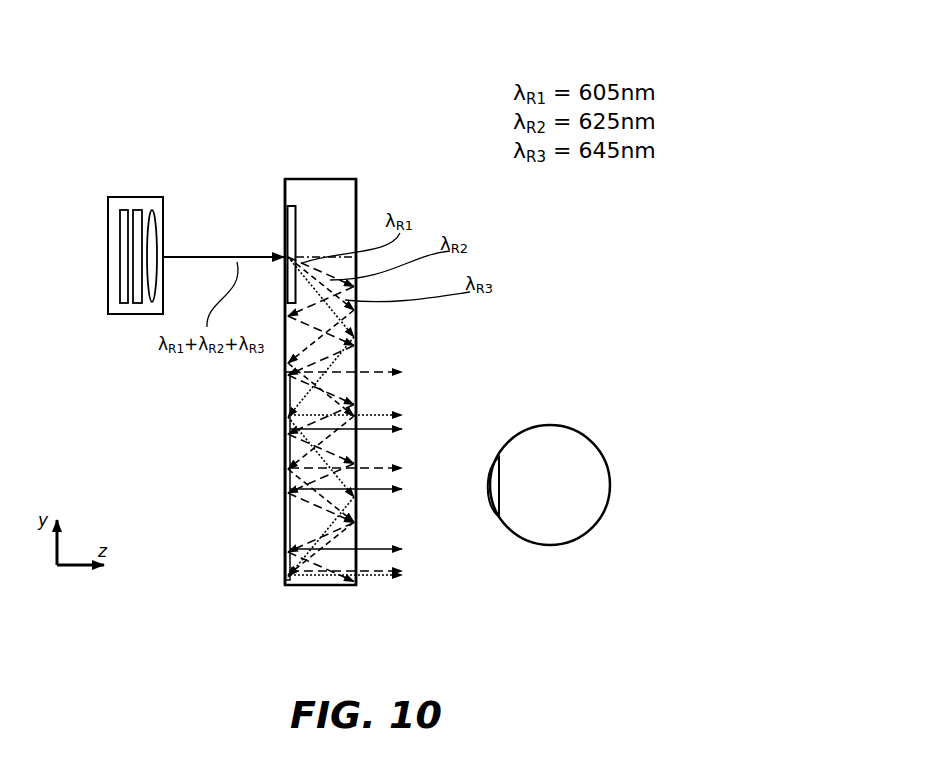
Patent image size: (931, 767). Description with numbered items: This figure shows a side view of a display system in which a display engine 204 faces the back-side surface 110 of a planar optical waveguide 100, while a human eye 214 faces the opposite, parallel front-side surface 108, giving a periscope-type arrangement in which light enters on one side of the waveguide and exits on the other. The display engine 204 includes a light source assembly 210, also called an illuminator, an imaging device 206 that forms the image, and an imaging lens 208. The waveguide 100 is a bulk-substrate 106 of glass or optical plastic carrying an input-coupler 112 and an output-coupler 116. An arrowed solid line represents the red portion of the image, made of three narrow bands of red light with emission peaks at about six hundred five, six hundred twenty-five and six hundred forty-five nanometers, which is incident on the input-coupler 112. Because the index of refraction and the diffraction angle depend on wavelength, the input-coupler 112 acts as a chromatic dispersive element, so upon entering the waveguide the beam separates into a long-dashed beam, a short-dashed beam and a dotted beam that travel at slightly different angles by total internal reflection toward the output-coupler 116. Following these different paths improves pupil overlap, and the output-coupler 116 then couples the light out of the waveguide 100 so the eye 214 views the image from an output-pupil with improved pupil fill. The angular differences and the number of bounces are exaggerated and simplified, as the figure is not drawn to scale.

The planar optical waveguide 100 is at (343, 70).
The bulk-substrate 106 is at (318, 183).
The front-side surface 108 is at (357, 198).
The back-side surface 110 is at (283, 189).
The input-coupler 112 is at (282, 208).
The output-coupler 116 is at (283, 530).
The display engine 204 is at (138, 197).
The imaging device 206 is at (137, 305).
The imaging lens 208 is at (157, 305).
The light source assembly 210 is at (124, 305).
The human eye 214 is at (567, 447).